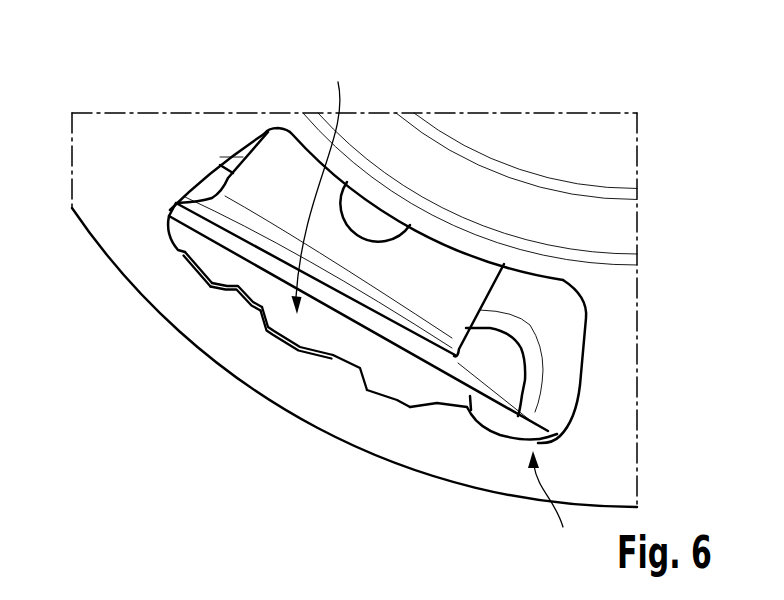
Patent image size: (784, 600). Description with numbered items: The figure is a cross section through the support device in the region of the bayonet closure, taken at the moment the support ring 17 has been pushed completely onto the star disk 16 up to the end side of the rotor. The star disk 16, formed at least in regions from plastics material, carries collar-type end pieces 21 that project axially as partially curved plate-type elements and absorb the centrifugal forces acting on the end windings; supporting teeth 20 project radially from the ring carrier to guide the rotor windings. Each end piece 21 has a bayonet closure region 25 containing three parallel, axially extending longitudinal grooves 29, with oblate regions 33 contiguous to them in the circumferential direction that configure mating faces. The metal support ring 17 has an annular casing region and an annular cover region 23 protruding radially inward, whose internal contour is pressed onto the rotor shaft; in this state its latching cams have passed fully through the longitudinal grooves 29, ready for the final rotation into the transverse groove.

The star disk 16 is at (554, 507).
The support ring 17 is at (105, 254).
The supporting teeth 20 is at (437, 277).
The end pieces 21 is at (507, 423).
The cover region 23 is at (586, 140).
The bayonet closure region 25 is at (321, 180).
The longitudinal grooves 29 is at (250, 305).
The oblate regions 33 is at (195, 270).